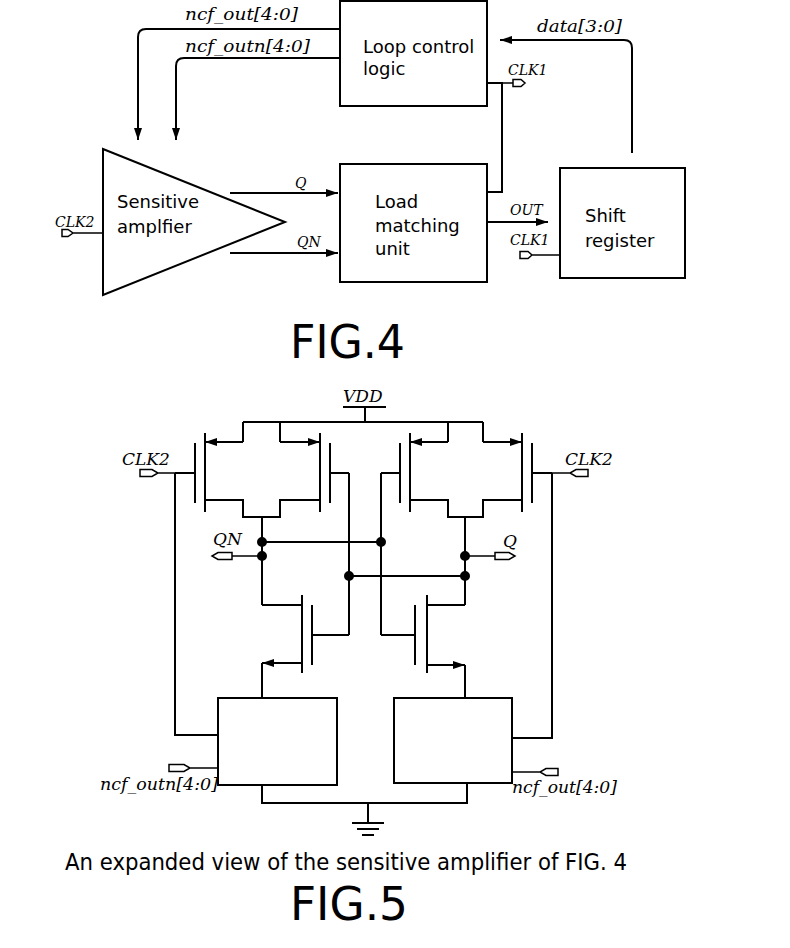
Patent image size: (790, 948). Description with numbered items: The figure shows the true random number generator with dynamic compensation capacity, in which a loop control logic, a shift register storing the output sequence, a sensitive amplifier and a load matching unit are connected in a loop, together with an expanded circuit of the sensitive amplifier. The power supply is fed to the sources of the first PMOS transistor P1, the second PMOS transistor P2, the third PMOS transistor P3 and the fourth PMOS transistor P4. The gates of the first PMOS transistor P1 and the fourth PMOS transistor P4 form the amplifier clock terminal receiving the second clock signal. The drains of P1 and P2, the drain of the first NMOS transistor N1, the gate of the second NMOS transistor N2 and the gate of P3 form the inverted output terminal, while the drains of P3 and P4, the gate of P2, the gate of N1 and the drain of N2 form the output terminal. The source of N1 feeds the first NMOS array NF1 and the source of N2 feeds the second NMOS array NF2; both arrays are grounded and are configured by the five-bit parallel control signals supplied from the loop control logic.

The first PMOS transistor P1 is at (218, 469).
The second PMOS transistor P2 is at (305, 469).
The third PMOS transistor P3 is at (423, 469).
The fourth PMOS transistor P4 is at (508, 469).
The first NMOS transistor N1 is at (300, 646).
The second NMOS transistor N2 is at (431, 646).
The first NMOS array NF1 is at (277, 741).
The second NMOS array NF2 is at (453, 740).